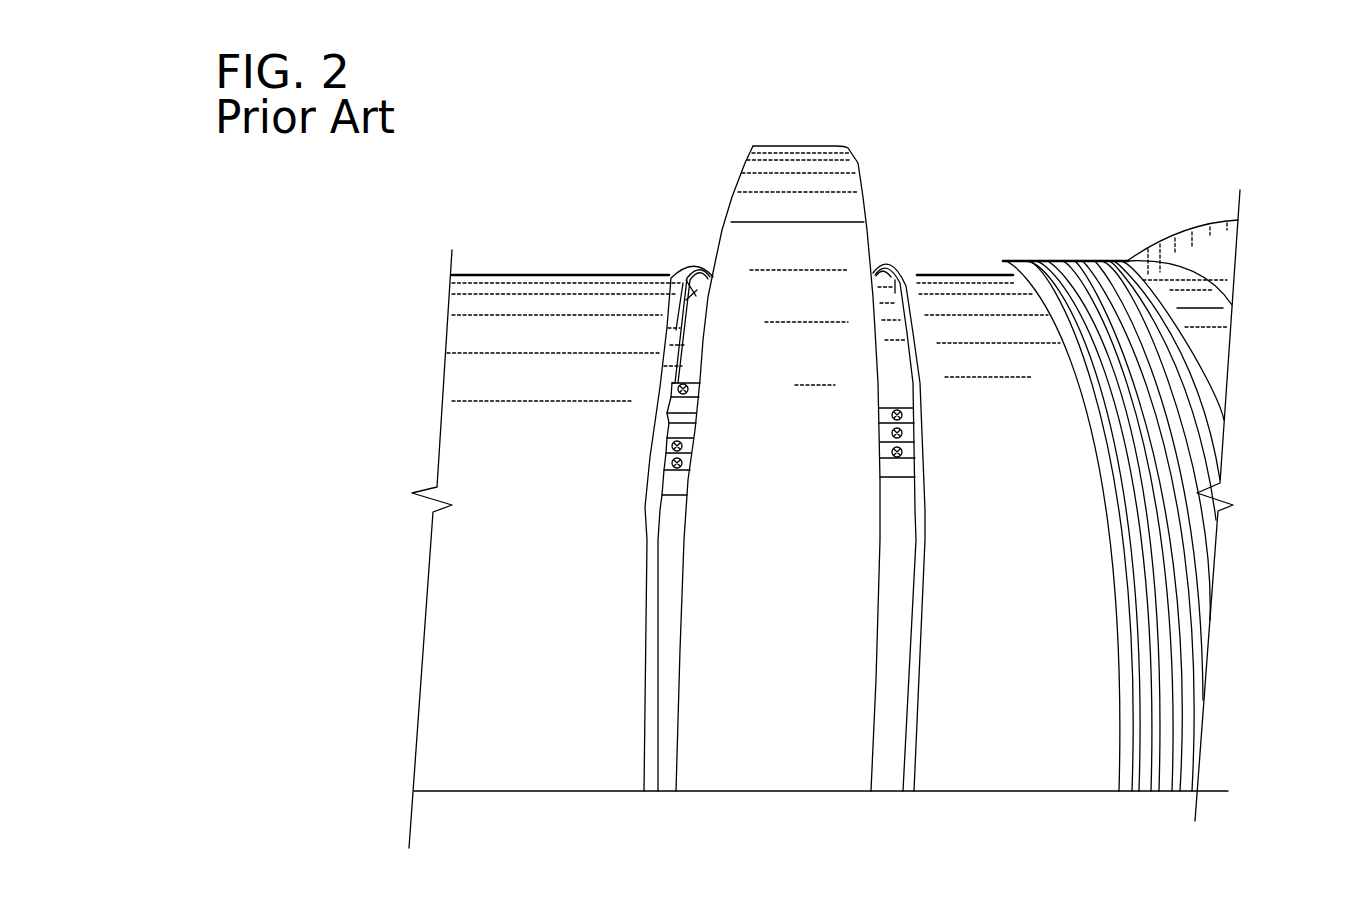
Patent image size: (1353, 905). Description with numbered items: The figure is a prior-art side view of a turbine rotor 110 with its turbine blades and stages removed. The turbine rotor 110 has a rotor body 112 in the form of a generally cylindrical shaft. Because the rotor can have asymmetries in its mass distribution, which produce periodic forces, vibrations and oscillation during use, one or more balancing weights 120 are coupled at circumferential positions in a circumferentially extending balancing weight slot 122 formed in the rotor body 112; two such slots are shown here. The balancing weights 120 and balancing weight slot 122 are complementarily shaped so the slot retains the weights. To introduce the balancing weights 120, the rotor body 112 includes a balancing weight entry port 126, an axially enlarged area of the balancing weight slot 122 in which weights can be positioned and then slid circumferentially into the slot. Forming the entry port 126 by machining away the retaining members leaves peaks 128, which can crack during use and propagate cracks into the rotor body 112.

The turbine rotor 110 is at (995, 288).
The rotor body 112 is at (593, 282).
The balancing weights 120 is at (668, 459).
The balancing weight slot 122 is at (693, 270).
The balancing weight entry port 126 is at (945, 302).
The peaks 128 is at (703, 410).